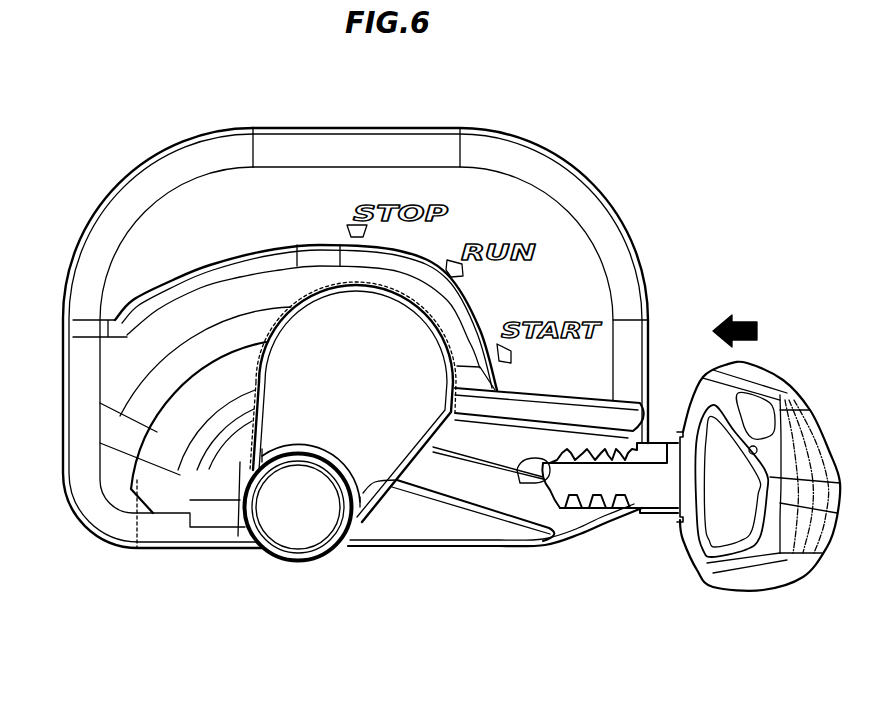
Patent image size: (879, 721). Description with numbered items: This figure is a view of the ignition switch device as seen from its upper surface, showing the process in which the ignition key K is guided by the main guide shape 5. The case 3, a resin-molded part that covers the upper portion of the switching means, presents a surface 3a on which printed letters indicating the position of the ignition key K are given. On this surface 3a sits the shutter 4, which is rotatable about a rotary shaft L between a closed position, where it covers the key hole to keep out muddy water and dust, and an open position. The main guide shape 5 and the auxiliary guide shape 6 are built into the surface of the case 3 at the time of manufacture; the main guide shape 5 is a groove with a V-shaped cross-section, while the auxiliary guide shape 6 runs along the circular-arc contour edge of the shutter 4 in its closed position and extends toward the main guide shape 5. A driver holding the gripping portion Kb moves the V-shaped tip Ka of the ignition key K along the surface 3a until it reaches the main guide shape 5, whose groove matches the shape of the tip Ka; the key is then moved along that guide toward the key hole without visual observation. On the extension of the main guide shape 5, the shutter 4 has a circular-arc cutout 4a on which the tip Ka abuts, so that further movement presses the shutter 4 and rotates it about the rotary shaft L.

The case 3 is at (648, 270).
The surface of the case 3a is at (160, 251).
The shutter 4 is at (383, 322).
The cutout 4a is at (412, 458).
The main guide shape 5 is at (531, 462).
The auxiliary guide shape 6 is at (341, 272).
The ignition key K is at (799, 355).
The tip of the ignition key Ka is at (557, 477).
The gripping portion Kb is at (690, 550).
The rotary shaft L is at (298, 506).